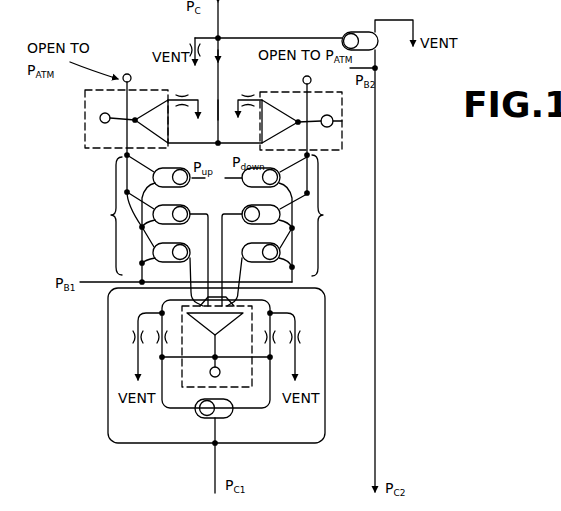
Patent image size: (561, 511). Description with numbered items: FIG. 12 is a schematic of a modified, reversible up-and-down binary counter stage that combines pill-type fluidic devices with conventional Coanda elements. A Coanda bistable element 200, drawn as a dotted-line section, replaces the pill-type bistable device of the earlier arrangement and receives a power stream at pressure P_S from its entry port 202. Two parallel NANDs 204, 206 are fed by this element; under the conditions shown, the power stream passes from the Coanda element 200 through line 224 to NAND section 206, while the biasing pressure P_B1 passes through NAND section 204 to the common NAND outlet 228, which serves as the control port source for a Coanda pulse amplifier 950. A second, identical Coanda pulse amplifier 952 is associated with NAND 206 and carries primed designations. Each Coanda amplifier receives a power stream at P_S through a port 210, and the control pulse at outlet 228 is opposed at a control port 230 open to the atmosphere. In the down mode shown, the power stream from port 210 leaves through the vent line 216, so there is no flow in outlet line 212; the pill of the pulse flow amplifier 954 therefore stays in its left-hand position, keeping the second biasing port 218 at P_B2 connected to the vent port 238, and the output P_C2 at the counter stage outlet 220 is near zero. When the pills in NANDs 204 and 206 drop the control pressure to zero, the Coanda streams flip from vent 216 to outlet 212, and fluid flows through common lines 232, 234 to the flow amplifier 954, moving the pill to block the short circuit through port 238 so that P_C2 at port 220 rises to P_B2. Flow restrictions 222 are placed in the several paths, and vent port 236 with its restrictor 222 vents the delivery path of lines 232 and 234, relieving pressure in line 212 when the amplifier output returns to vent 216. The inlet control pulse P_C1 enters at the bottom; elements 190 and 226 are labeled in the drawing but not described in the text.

The control pressure line 190 is at (219, 4).
The Coanda bistable element 200 is at (248, 393).
The entry port 202 is at (210, 376).
The NAND 204 is at (145, 229).
The NAND 206 is at (287, 230).
The port 210 is at (143, 102).
The outlet line 212 is at (194, 119).
The vent line 216 is at (158, 106).
The second biasing port 218 is at (357, 68).
The counter stage outlet 220 is at (377, 430).
The flow restrictions 222 is at (190, 44).
The line 224 is at (241, 282).
The valve 226 is at (190, 282).
The common NAND outlet 228 is at (112, 121).
The control port 230 is at (106, 137).
The common line 232 is at (219, 102).
The common line 234 is at (313, 37).
The vent port 236 is at (219, 58).
The vent port 238 is at (378, 22).
The Coanda pulse amplifier 950 is at (82, 106).
The Coanda pulse amplifier 952 is at (345, 147).
The pulse flow amplifier 954 is at (352, 27).